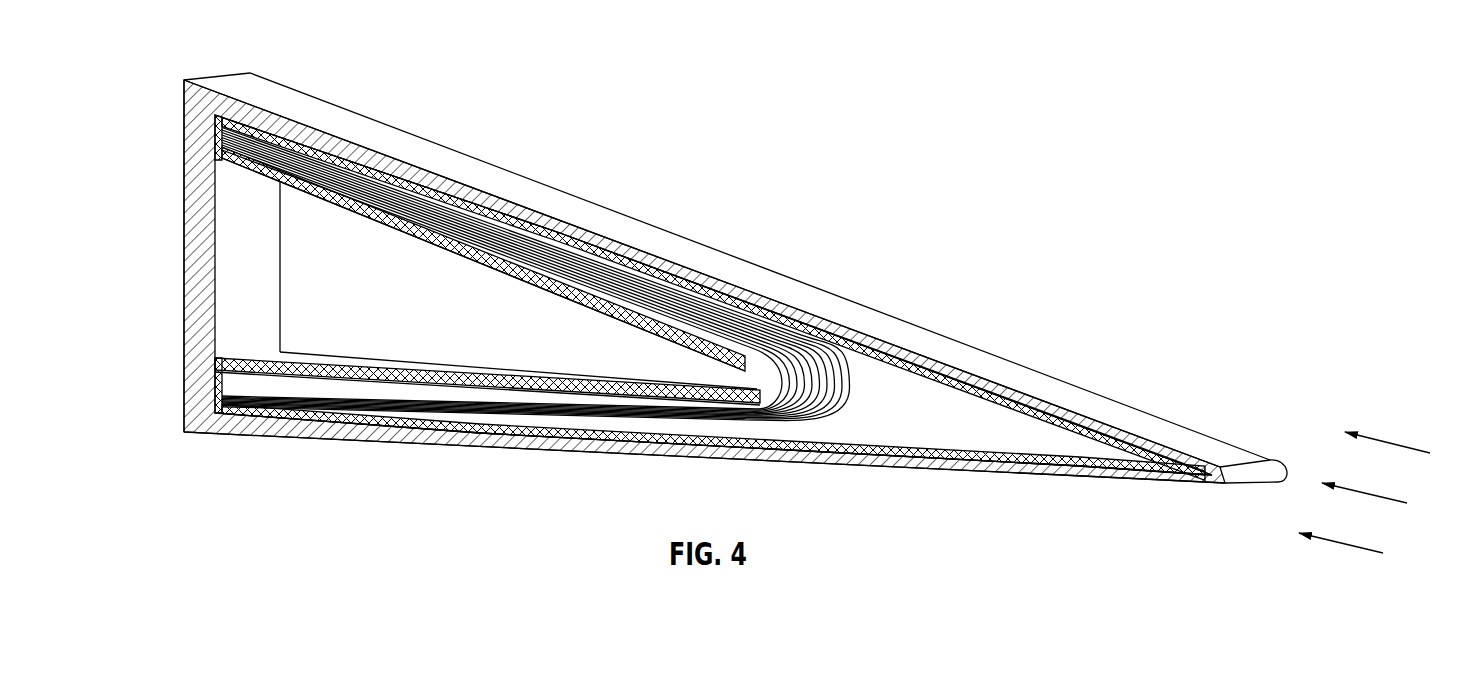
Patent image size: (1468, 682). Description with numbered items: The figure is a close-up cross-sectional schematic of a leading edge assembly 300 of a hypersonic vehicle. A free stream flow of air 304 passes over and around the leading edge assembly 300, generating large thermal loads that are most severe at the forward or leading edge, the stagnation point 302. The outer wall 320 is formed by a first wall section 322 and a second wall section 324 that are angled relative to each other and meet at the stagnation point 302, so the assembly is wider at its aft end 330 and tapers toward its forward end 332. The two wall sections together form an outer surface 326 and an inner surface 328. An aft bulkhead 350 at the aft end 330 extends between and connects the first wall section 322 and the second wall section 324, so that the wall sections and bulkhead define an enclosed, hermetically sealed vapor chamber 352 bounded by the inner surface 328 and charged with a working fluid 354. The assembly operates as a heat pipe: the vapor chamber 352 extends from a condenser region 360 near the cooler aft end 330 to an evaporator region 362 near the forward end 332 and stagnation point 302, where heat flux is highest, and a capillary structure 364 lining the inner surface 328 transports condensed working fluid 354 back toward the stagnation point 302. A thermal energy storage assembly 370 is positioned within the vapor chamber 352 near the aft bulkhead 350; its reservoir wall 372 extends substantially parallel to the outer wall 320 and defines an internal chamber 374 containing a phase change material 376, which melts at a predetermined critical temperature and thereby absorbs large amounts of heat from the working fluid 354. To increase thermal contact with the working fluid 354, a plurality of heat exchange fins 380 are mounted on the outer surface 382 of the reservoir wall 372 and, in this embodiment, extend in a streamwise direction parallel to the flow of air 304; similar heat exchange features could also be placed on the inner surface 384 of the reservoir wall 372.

The leading edge assembly 300 is at (1142, 222).
The stagnation point 302 is at (1285, 487).
The free stream flow of air 304 is at (1338, 545).
The outer wall 320 is at (737, 272).
The first wall section 322 is at (612, 240).
The second wall section 324 is at (600, 452).
The outer surface 326 is at (949, 338).
The inner surface 328 is at (881, 433).
The aft end 330 is at (193, 485).
The forward end 332 is at (1291, 385).
The aft bulkhead 350 is at (192, 310).
The vapor chamber 352 is at (864, 412).
The working fluid 354 is at (1063, 420).
The condenser region 360 is at (283, 400).
The evaporator region 362 is at (1097, 448).
The capillary structure 364 is at (1008, 425).
The thermal energy storage assembly 370 is at (437, 257).
The reservoir wall 372 is at (345, 210).
The internal chamber 374 is at (343, 309).
The phase change material 376 is at (297, 258).
The heat exchange fins 380 is at (843, 356).
The outer surface of reservoir wall 382 is at (764, 346).
The inner surface of reservoir wall 384 is at (609, 318).